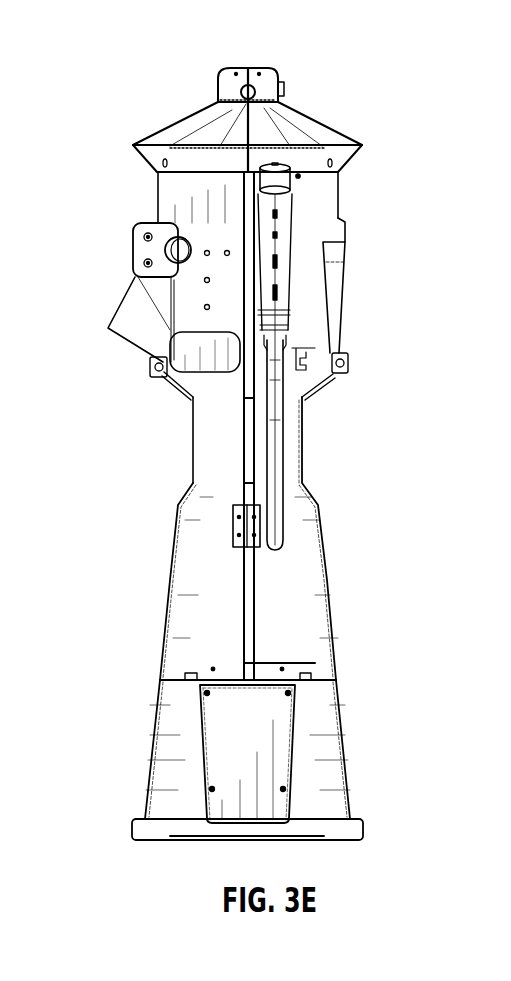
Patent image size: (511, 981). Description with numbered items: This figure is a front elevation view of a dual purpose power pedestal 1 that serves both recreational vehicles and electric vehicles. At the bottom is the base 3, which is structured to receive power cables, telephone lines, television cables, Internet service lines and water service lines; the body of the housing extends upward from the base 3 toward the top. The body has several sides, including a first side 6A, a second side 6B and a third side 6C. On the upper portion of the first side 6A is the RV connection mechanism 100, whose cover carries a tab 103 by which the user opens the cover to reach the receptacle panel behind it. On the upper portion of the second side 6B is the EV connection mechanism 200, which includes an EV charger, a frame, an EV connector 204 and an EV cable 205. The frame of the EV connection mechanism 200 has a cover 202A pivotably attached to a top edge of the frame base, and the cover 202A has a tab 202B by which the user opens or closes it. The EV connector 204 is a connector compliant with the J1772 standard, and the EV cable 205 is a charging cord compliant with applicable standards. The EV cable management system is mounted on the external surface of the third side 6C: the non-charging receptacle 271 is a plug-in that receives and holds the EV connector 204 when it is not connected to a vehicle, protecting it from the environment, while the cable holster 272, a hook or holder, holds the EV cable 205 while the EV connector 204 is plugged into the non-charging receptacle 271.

The dual purpose power pedestal 1 is at (133, 62).
The base 3 is at (257, 843).
The first side 6A is at (172, 530).
The second side 6B is at (327, 600).
The third side 6C is at (190, 600).
The RV connection mechanism 100 is at (138, 297).
The tab 103 is at (158, 380).
The EV connection mechanism 200 is at (332, 270).
The cover 202A is at (345, 330).
The tab 202B is at (348, 373).
The EV connector 204 is at (290, 190).
The EV cable 205 is at (285, 452).
The non-charging receptacle 271 is at (133, 258).
The cable holster 272 is at (150, 363).